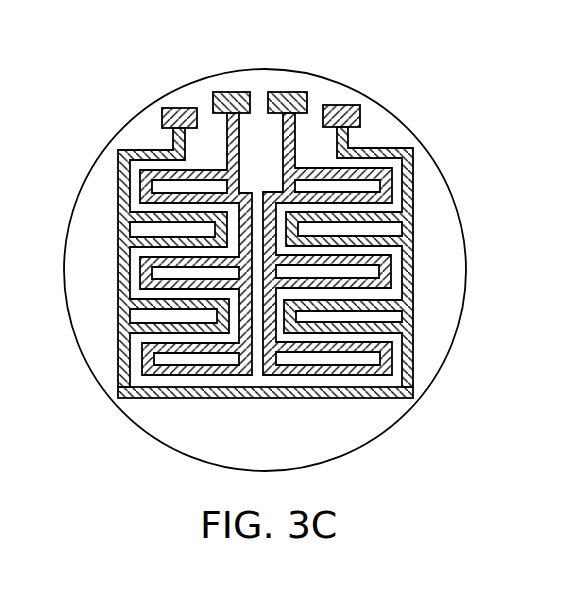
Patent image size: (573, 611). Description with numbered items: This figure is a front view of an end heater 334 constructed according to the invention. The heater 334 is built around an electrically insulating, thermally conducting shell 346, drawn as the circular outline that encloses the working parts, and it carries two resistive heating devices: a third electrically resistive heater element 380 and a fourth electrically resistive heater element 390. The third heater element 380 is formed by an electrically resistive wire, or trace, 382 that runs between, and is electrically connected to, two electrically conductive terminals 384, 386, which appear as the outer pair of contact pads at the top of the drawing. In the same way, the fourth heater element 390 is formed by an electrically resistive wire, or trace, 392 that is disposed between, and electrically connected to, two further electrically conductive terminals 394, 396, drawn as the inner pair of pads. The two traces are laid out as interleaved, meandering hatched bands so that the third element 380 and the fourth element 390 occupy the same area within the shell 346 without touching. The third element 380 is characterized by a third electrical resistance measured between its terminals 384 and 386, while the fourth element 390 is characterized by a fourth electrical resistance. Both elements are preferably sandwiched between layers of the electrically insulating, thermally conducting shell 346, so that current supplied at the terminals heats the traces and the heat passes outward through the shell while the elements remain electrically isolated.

The end heater 334 is at (126, 477).
The electrically insulating, thermally conducting shell 346 is at (378, 432).
The third electrically resistive heater element 380 is at (118, 185).
The electrically resistive wire, or trace 382 is at (118, 290).
The electrically conductive terminal 384 is at (181, 108).
The electrically conductive terminal 386 is at (356, 105).
The fourth electrically resistive heater element 390 is at (308, 168).
The electrically resistive wire, or trace 392 is at (228, 375).
The electrically conductive terminal 394 is at (232, 93).
The electrically conductive terminal 396 is at (284, 92).